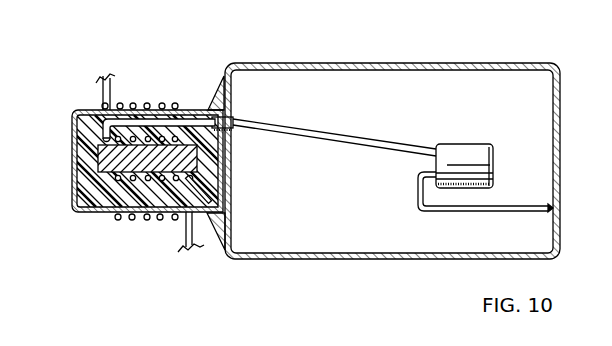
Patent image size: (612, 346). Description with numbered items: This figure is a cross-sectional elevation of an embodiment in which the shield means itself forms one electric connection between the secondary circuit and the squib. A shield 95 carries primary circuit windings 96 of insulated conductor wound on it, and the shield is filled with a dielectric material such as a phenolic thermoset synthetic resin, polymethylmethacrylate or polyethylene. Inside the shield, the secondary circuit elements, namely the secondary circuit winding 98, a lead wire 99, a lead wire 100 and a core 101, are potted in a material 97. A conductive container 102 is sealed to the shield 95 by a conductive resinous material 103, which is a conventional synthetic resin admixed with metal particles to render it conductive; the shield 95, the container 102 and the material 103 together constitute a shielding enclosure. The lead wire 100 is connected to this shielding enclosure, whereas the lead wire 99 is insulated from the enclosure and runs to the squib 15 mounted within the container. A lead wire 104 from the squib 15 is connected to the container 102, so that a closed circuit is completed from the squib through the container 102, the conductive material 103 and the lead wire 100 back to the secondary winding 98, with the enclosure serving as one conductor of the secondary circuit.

The conductive container 102 is at (330, 63).
The squib 15 is at (452, 153).
The lead wire 104 is at (419, 184).
The potting material 97 is at (87, 122).
The primary circuit windings 96 is at (176, 103).
The lead wire 99 is at (189, 121).
The core 101 is at (102, 158).
The shield 95 is at (75, 188).
The secondary circuit winding 98 is at (95, 196).
The lead wire 100 is at (208, 187).
The conductive resinous material 103 is at (226, 240).